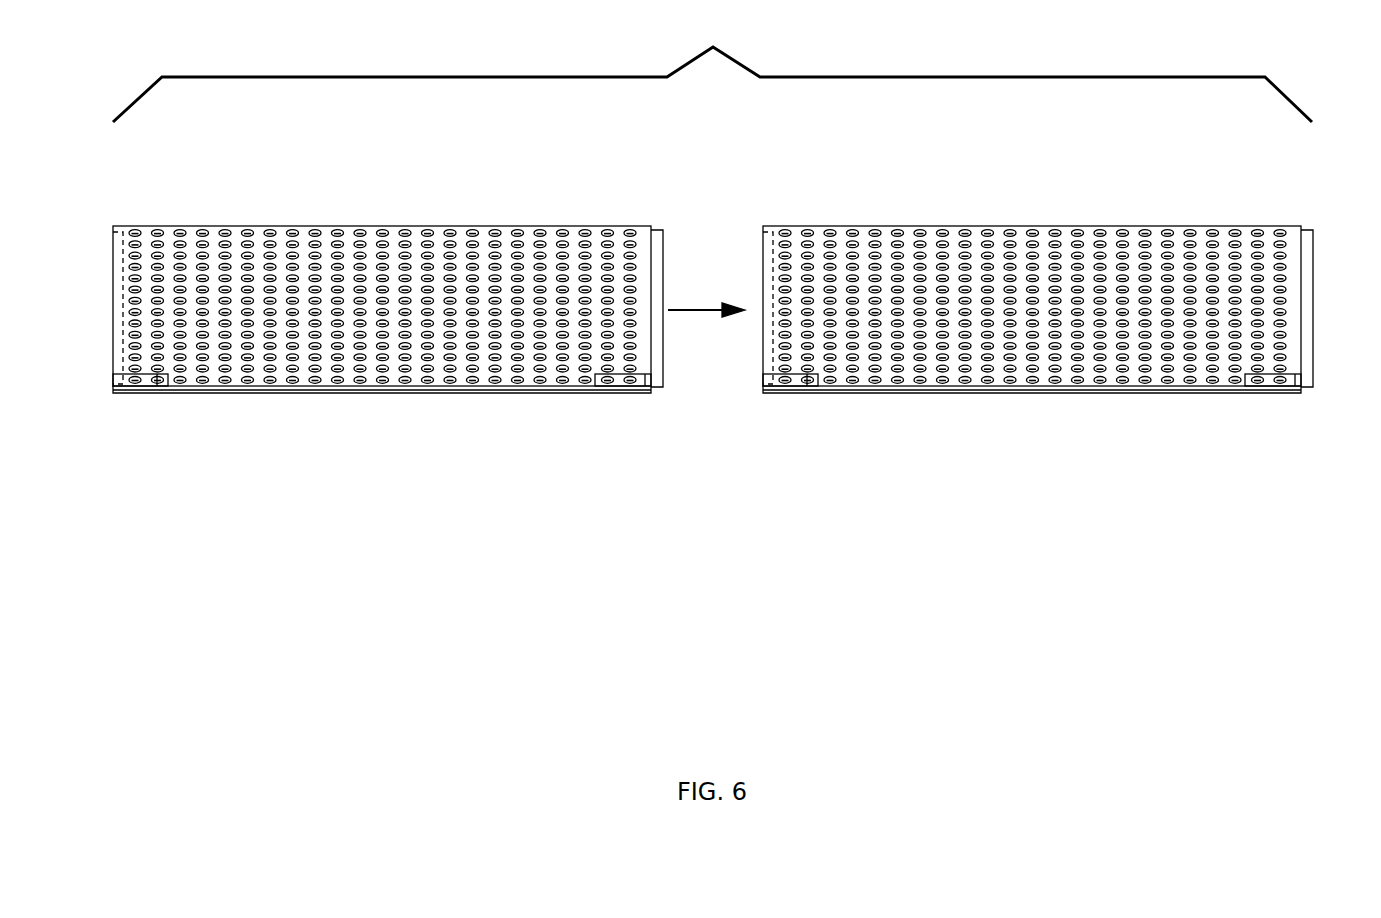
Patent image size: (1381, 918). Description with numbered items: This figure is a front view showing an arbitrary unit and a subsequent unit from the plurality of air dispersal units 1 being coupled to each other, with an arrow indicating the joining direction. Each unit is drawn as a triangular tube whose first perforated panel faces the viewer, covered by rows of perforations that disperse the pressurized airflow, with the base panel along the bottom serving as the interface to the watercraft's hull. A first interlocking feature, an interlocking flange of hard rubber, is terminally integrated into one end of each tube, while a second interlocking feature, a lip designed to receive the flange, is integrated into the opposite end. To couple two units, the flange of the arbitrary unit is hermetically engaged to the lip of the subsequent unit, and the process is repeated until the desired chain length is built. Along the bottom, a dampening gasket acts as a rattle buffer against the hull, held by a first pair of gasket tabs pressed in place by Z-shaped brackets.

The air dispersal unit 1 is at (518, 138).